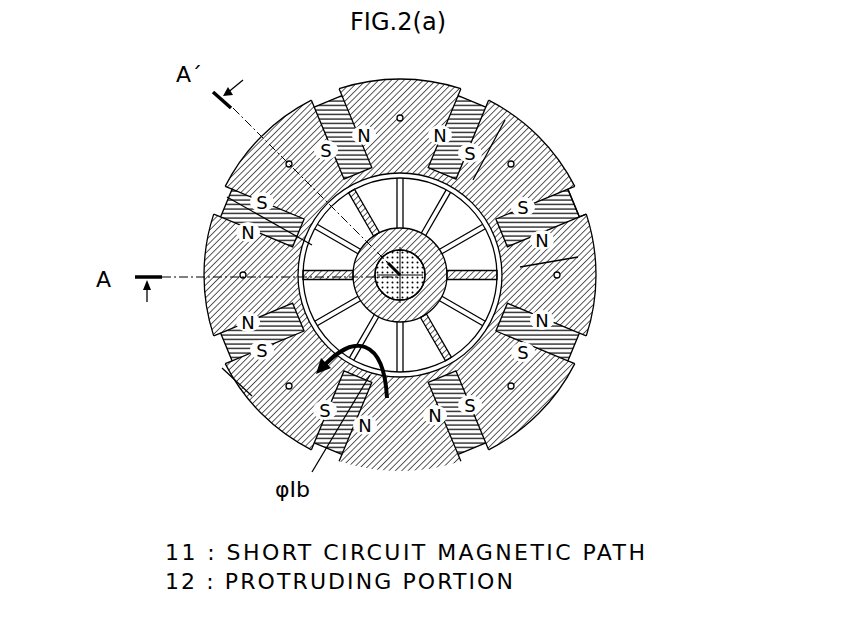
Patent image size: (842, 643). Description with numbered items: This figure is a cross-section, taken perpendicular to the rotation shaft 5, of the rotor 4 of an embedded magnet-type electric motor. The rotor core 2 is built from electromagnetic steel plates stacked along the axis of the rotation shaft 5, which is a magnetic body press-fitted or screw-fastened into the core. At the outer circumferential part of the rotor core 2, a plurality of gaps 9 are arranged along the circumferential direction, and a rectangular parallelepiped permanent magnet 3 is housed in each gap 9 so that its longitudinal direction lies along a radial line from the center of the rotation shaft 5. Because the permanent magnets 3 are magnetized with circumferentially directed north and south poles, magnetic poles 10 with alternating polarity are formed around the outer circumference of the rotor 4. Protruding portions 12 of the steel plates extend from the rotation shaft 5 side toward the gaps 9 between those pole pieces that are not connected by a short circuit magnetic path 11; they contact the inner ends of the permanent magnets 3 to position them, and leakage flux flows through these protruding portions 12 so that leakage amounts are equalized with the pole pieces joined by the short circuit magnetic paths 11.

The rotor core 2 is at (290, 437).
The permanent magnet 3 is at (578, 195).
The rotor 4 is at (93, 72).
The rotation shaft 5 is at (478, 417).
The gap 9 is at (582, 218).
The magnetic pole 10 is at (402, 79).
The short circuit magnetic path 11 is at (227, 197).
The protruding portion 12 is at (505, 121).